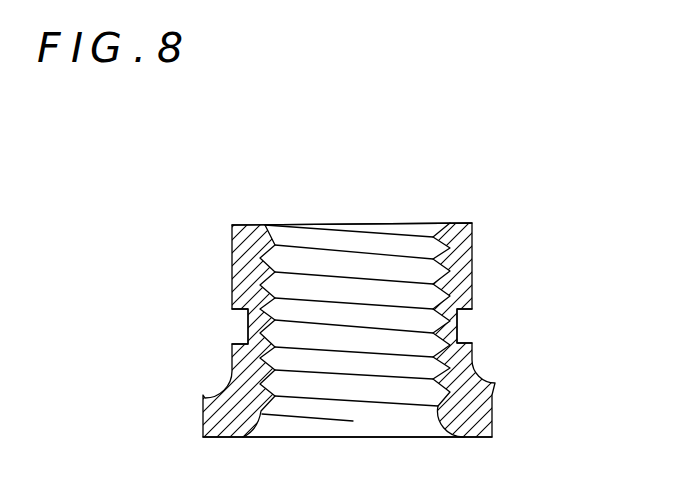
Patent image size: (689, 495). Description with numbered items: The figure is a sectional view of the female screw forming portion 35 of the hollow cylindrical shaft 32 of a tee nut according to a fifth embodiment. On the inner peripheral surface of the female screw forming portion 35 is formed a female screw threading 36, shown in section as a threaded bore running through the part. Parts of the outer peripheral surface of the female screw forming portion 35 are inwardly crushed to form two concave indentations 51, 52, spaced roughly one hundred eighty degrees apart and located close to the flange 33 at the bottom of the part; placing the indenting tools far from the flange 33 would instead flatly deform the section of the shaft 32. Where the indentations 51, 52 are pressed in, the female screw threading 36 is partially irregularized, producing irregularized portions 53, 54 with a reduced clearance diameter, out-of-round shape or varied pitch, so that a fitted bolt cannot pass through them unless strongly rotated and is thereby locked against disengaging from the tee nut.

The shaft 32 is at (478, 227).
The flange 33 is at (208, 420).
The female screw forming portion 35 is at (233, 242).
The female screw threading 36 is at (337, 248).
The concave indentation 51 is at (242, 327).
The concave indentation 52 is at (463, 323).
The irregularized portion 53 is at (268, 318).
The irregularized portion 54 is at (437, 330).